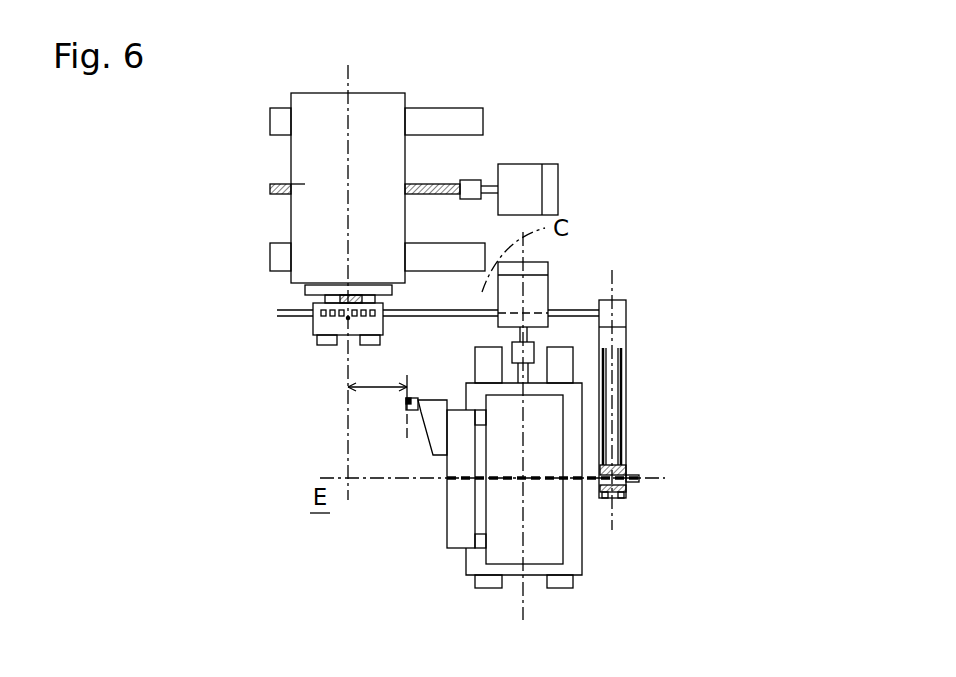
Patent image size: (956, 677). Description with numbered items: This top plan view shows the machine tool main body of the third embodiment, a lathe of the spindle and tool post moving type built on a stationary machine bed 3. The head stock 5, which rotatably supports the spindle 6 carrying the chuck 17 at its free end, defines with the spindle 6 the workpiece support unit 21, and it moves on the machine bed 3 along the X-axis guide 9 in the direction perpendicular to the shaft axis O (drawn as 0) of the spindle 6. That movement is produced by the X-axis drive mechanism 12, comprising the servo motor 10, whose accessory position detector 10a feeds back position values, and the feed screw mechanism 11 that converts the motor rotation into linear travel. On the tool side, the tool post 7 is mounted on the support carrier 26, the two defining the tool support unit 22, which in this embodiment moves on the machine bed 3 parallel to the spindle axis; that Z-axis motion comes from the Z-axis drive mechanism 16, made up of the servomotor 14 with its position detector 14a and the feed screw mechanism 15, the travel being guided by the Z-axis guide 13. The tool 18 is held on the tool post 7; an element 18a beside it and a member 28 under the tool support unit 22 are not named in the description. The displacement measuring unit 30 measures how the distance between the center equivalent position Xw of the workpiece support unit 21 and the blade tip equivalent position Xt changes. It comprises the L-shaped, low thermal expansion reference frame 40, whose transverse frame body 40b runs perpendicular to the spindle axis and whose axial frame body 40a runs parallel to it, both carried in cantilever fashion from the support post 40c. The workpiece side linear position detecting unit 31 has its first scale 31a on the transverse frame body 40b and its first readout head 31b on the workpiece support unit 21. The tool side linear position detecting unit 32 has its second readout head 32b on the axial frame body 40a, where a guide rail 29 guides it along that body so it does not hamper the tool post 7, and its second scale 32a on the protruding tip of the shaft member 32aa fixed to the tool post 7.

The machine bed 3 is at (518, 116).
The X-axis guide 9 is at (421, 117).
The shaft axis of the spindle 0 is at (347, 124).
The head stock 5 is at (305, 184).
The spindle 6 is at (370, 297).
The workpiece support unit 21 is at (176, 165).
The feed screw mechanism 11 is at (446, 184).
The servo motor 10 is at (515, 170).
The position detector 10a is at (556, 191).
The X-axis drive mechanism 12 is at (644, 68).
The transverse frame body 40b is at (424, 310).
The workpiece side linear position detecting unit 31 is at (128, 290).
The first readout head 31b is at (305, 290).
The first scale 31a is at (318, 337).
The chuck 17 is at (322, 346).
The center equivalent position of the workpiece support unit Xw is at (348, 333).
The tool 18 is at (405, 402).
The tool holder 18a is at (430, 428).
The blade tip equivalent position Xt is at (452, 508).
The tool post 7 is at (468, 533).
The base 28 is at (575, 548).
The support carrier 26 is at (497, 548).
The tool support unit 22 is at (505, 592).
The Z-axis guide 13 is at (490, 367).
The servomotor 14 is at (538, 268).
The position detector 14a is at (532, 288).
The feed screw mechanism 15 is at (540, 350).
The Z-axis drive mechanism 16 is at (682, 240).
The reference frame 40 is at (624, 340).
The support post 40c is at (626, 322).
The guide rail 29 is at (622, 383).
The axial frame body 40a is at (623, 420).
The displacement measuring unit 30 is at (628, 437).
The tool side linear position detecting unit 32 is at (716, 505).
The second scale 32a is at (632, 484).
The second readout head 32b is at (621, 496).
The shaft member 32aa is at (538, 482).